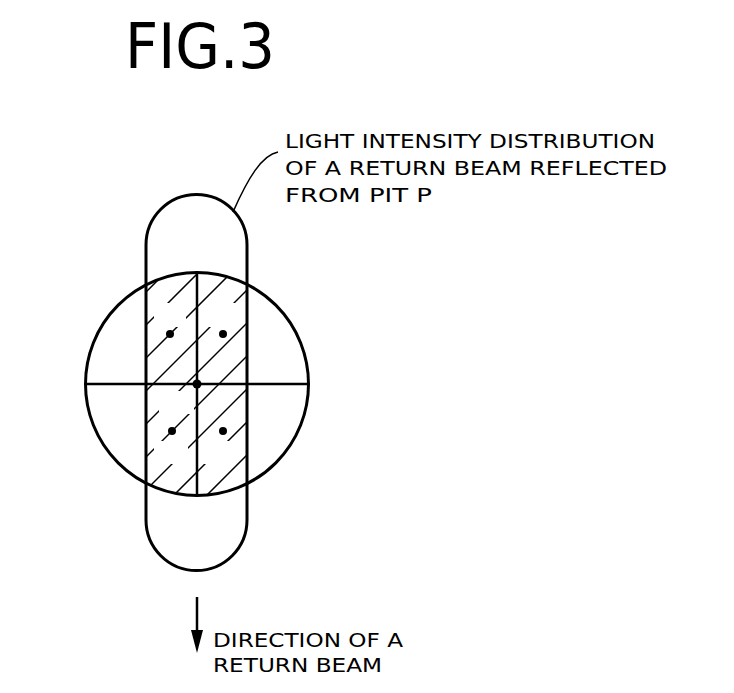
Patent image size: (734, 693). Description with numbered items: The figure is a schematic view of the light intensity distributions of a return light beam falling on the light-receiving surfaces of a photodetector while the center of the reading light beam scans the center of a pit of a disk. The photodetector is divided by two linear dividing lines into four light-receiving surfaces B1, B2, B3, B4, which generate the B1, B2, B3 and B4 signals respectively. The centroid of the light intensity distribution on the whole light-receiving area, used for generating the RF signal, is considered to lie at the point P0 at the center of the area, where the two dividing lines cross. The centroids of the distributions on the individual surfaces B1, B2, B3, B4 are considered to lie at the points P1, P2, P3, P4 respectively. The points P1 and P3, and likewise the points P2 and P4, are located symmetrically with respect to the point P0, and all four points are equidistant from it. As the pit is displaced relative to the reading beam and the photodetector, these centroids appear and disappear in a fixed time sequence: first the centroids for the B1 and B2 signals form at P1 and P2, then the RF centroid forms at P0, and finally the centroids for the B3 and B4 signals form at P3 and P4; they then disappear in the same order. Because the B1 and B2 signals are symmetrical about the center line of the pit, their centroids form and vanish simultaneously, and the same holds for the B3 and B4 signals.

The light-receiving surface B1 is at (102, 325).
The light-receiving surface B2 is at (302, 345).
The light-receiving surface B3 is at (300, 435).
The light-receiving surface B4 is at (105, 448).
The centroid point of RF signal light intensity distribution P0 is at (182, 398).
The centroid point of B1 signal light intensity distribution P1 is at (170, 319).
The centroid point of B2 signal light intensity distribution P2 is at (220, 319).
The centroid point of B3 signal light intensity distribution P3 is at (219, 446).
The centroid point of B4 signal light intensity distribution P4 is at (171, 446).